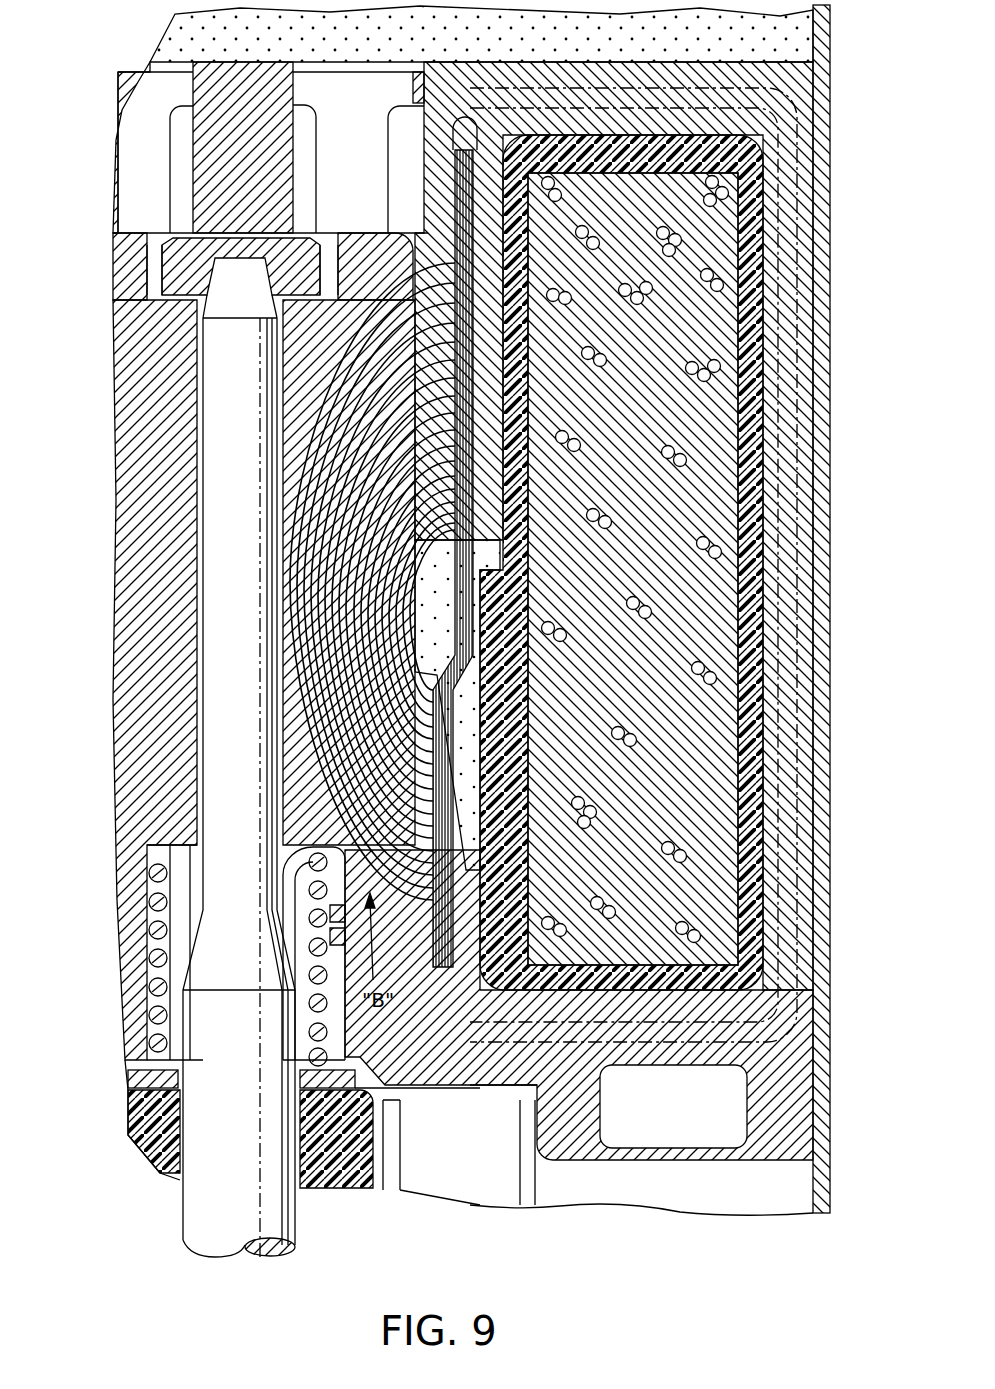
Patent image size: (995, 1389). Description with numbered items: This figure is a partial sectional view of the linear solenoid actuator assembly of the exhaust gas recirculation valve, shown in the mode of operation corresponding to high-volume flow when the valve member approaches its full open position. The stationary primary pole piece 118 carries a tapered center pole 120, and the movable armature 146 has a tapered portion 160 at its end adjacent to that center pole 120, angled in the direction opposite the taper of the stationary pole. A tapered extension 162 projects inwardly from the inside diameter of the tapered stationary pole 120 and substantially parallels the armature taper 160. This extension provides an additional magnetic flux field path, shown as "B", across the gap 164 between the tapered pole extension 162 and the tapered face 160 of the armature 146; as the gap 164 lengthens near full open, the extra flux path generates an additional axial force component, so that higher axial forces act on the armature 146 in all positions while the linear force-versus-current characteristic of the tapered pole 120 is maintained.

The primary pole piece 118 is at (808, 628).
The tapered primary center pole piece 120 is at (480, 672).
The armature 146 is at (120, 690).
The tapered portion 160 is at (427, 880).
The tapered extension 162 is at (340, 935).
The gap 164 is at (333, 917).